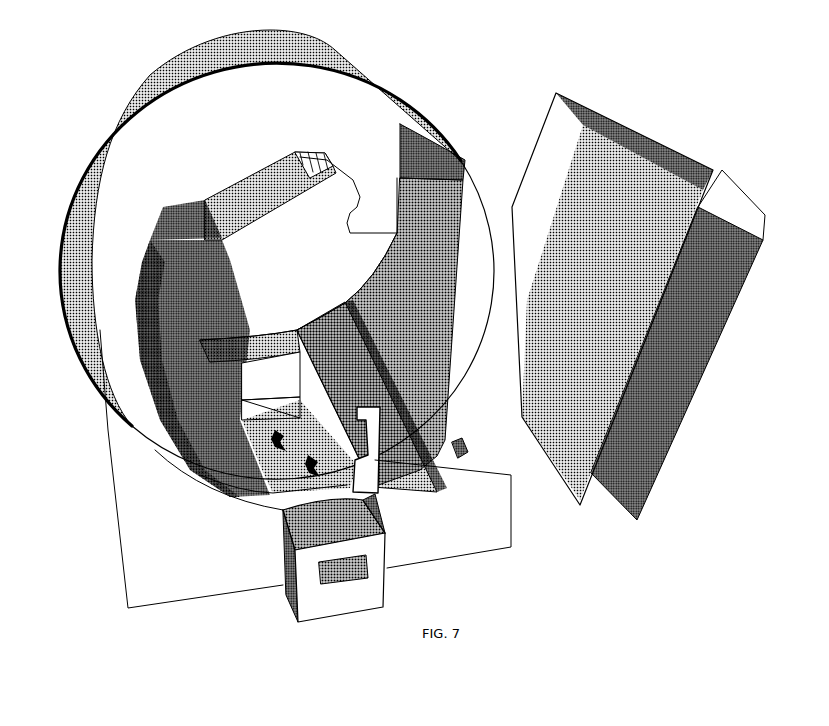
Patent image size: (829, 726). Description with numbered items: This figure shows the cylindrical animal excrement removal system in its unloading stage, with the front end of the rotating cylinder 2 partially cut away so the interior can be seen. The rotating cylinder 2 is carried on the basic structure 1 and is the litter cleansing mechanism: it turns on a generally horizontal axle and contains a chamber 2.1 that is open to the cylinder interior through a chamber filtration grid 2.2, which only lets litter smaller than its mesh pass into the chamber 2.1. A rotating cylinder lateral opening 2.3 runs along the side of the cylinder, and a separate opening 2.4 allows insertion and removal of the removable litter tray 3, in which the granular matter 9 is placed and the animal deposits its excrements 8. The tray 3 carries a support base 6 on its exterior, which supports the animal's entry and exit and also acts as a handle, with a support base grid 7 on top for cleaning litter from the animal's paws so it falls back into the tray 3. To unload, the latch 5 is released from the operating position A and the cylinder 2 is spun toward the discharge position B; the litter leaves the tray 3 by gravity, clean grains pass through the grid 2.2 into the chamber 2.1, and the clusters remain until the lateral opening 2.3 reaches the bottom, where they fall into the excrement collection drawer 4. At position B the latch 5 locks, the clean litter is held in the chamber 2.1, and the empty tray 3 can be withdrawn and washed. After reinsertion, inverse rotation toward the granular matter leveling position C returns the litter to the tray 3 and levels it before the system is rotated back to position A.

The basic structure 1 is at (145, 582).
The rotating cylinder 2 is at (360, 130).
The chamber 2.1 is at (225, 207).
The chamber filtration grid 2.2 is at (300, 162).
The rotating cylinder lateral opening 2.3 is at (365, 472).
The opening for insertion and removal of removable drawer 2.4 is at (458, 145).
The removable litter tray 3 is at (642, 216).
The excrement collection drawer 4 is at (375, 597).
The latch 5 is at (452, 514).
The support base 6 is at (733, 217).
The support base grid 7 is at (655, 422).
The excrements 8 is at (135, 403).
The granular matter 9 is at (130, 307).
The operating position A is at (190, 481).
The discharge position B is at (464, 452).
The granular matter leveling position C is at (253, 508).